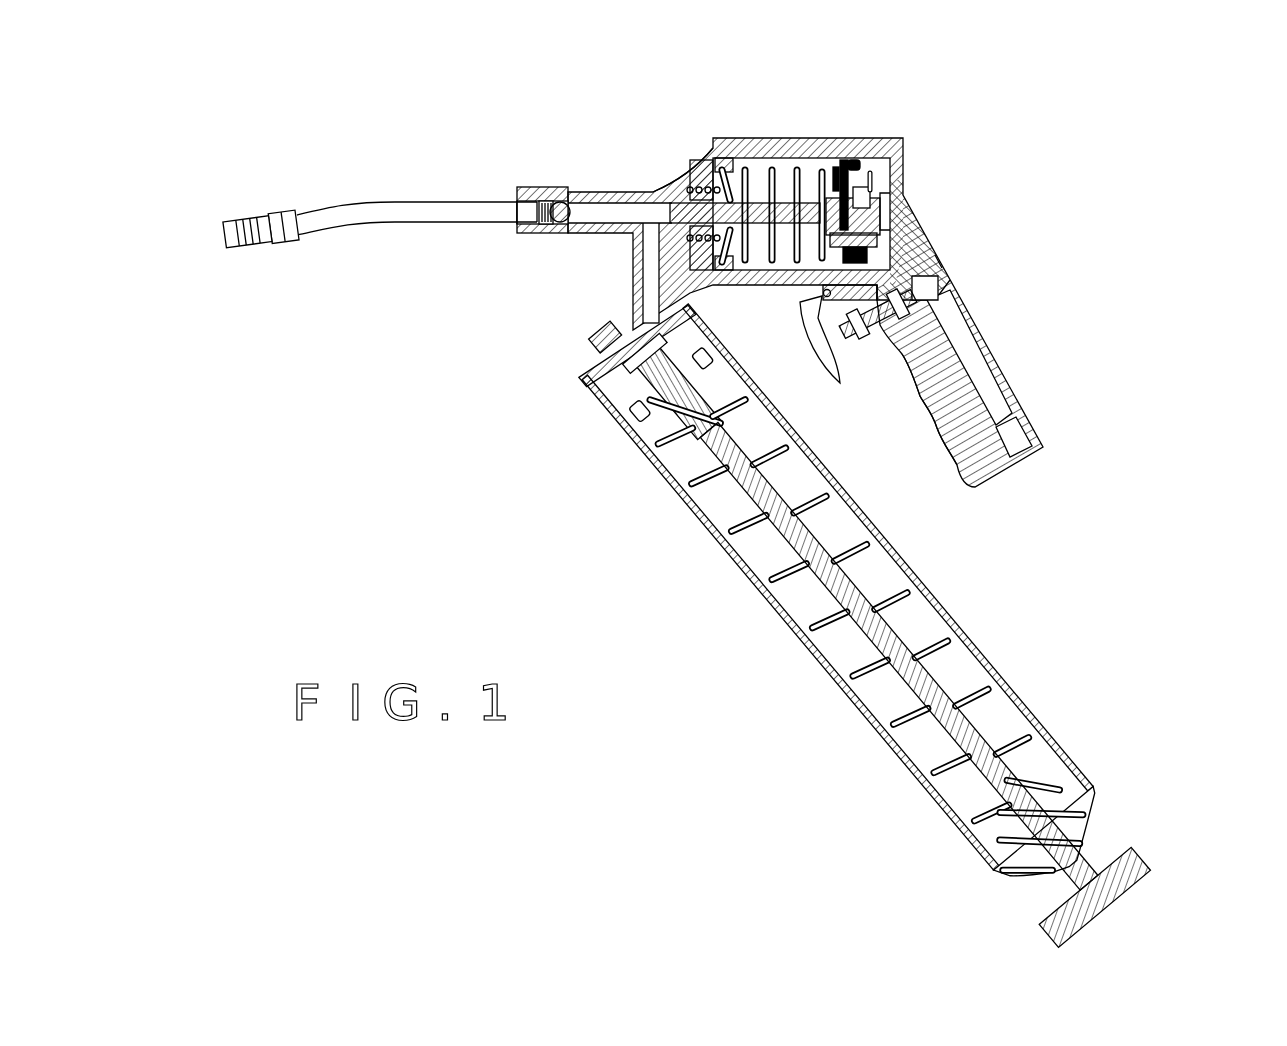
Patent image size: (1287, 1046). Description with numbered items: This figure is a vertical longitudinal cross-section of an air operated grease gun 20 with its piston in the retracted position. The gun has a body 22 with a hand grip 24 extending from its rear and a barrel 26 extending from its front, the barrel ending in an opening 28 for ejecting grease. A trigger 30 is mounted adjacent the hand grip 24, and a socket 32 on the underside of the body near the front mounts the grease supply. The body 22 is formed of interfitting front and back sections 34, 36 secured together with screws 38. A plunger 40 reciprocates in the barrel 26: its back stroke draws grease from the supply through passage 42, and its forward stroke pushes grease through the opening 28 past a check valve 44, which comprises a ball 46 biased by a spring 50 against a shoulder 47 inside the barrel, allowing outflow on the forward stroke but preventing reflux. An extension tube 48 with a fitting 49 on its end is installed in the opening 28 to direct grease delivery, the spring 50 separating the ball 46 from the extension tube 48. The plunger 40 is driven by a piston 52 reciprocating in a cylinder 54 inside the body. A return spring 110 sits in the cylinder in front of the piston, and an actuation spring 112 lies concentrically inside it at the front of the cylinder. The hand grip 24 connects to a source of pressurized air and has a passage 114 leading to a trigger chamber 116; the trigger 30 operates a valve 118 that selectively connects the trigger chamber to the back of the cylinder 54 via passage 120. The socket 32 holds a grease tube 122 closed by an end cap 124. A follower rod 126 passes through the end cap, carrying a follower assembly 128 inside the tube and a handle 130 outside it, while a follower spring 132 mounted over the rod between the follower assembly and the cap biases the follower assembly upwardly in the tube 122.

The air operated grease gun 20 is at (530, 308).
The body 22 is at (808, 287).
The hand grip 24 is at (978, 331).
The barrel 26 is at (590, 191).
The opening 28 is at (517, 200).
The trigger 30 is at (839, 355).
The socket 32 is at (630, 404).
The front section 34 is at (690, 161).
The back section 36 is at (875, 140).
The screws 38 is at (727, 150).
The plunger 40 is at (806, 200).
The passage 42 is at (652, 270).
The check valve 44 is at (535, 229).
The ball 46 is at (560, 200).
The shoulder 47 is at (552, 228).
The extension tube 48 is at (412, 212).
The fitting 49 is at (240, 236).
The spring 50 is at (540, 188).
The piston 52 is at (862, 165).
The cylinder 54 is at (905, 237).
The return spring 110 is at (776, 190).
The actuation spring 112 is at (712, 152).
The passage 114 is at (975, 386).
The trigger chamber 116 is at (928, 292).
The valve 118 is at (898, 372).
The passage 120 is at (940, 256).
The grease tube 122 is at (733, 558).
The end cap 124 is at (1088, 825).
The follower rod 126 is at (830, 538).
The follower assembly 128 is at (653, 422).
The handle 130 is at (1118, 896).
The follower spring 132 is at (790, 580).